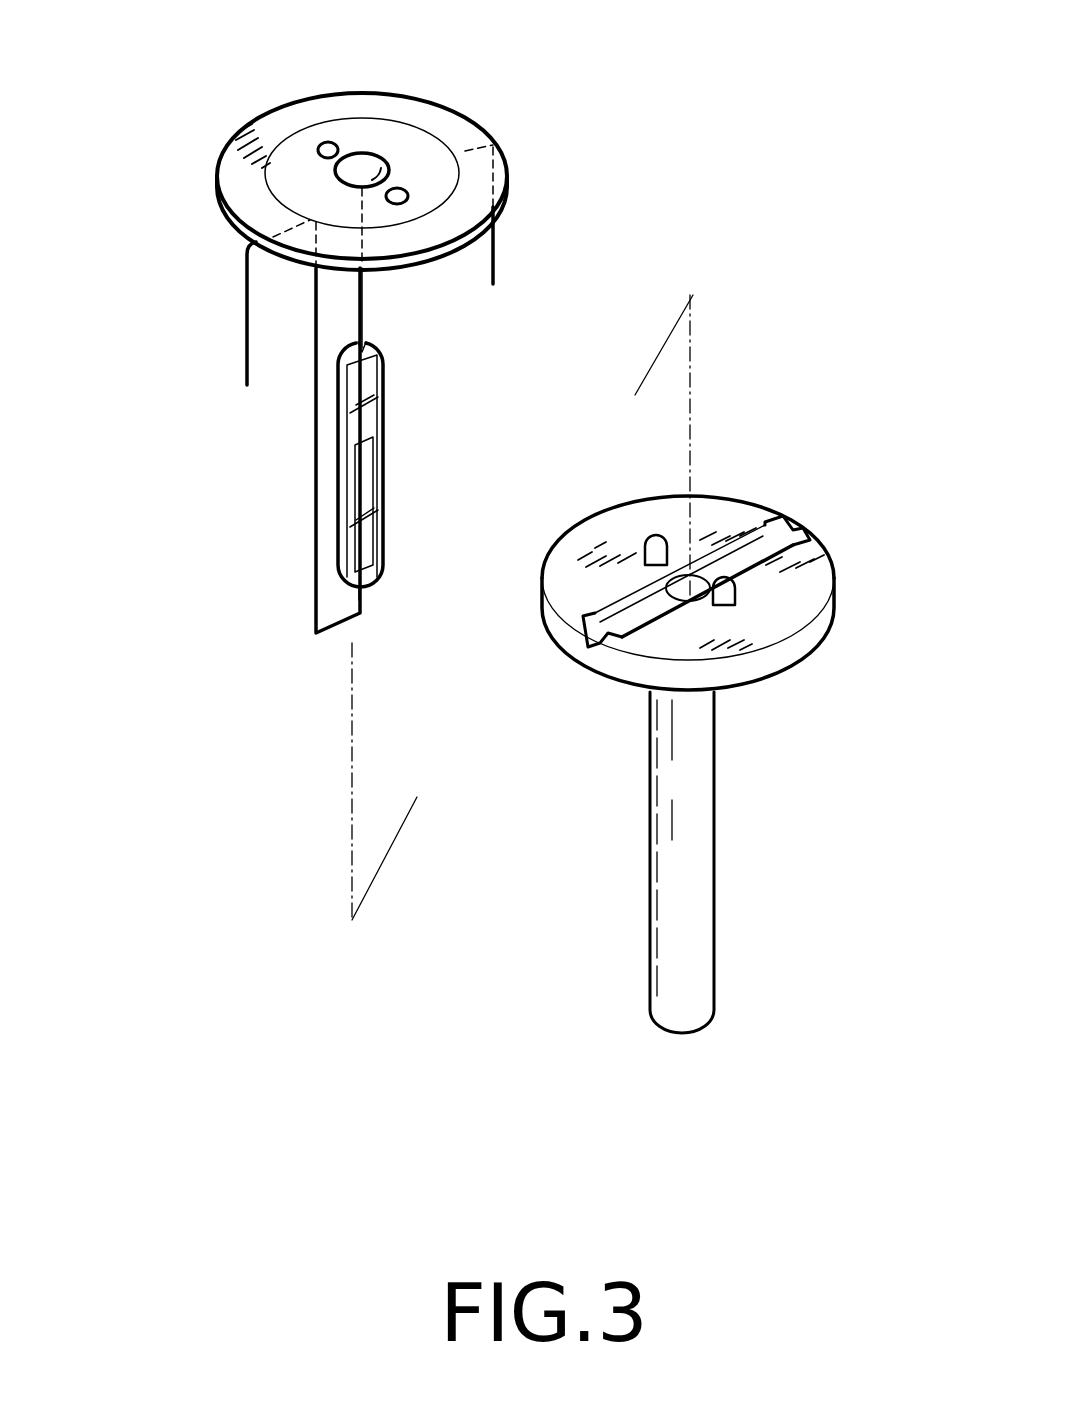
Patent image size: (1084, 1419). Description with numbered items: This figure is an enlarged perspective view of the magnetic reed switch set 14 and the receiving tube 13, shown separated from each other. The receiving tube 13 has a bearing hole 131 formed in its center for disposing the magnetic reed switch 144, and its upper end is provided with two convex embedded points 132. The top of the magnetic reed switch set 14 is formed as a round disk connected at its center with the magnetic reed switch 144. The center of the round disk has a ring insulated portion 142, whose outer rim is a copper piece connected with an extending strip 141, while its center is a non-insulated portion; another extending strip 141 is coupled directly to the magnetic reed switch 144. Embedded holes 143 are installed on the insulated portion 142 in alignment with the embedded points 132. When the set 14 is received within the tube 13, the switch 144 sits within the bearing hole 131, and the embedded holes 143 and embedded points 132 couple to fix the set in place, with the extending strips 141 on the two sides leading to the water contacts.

The receiving tube 13 is at (697, 807).
The bearing hole 131 is at (695, 583).
The convex embedded points 132 is at (735, 595).
The magnetic reed switch set 14 is at (210, 90).
The extending strip 141 is at (495, 258).
The ring insulated portion 142 is at (403, 142).
The embedded holes 143 is at (330, 143).
The magnetic reed switch 144 is at (375, 418).